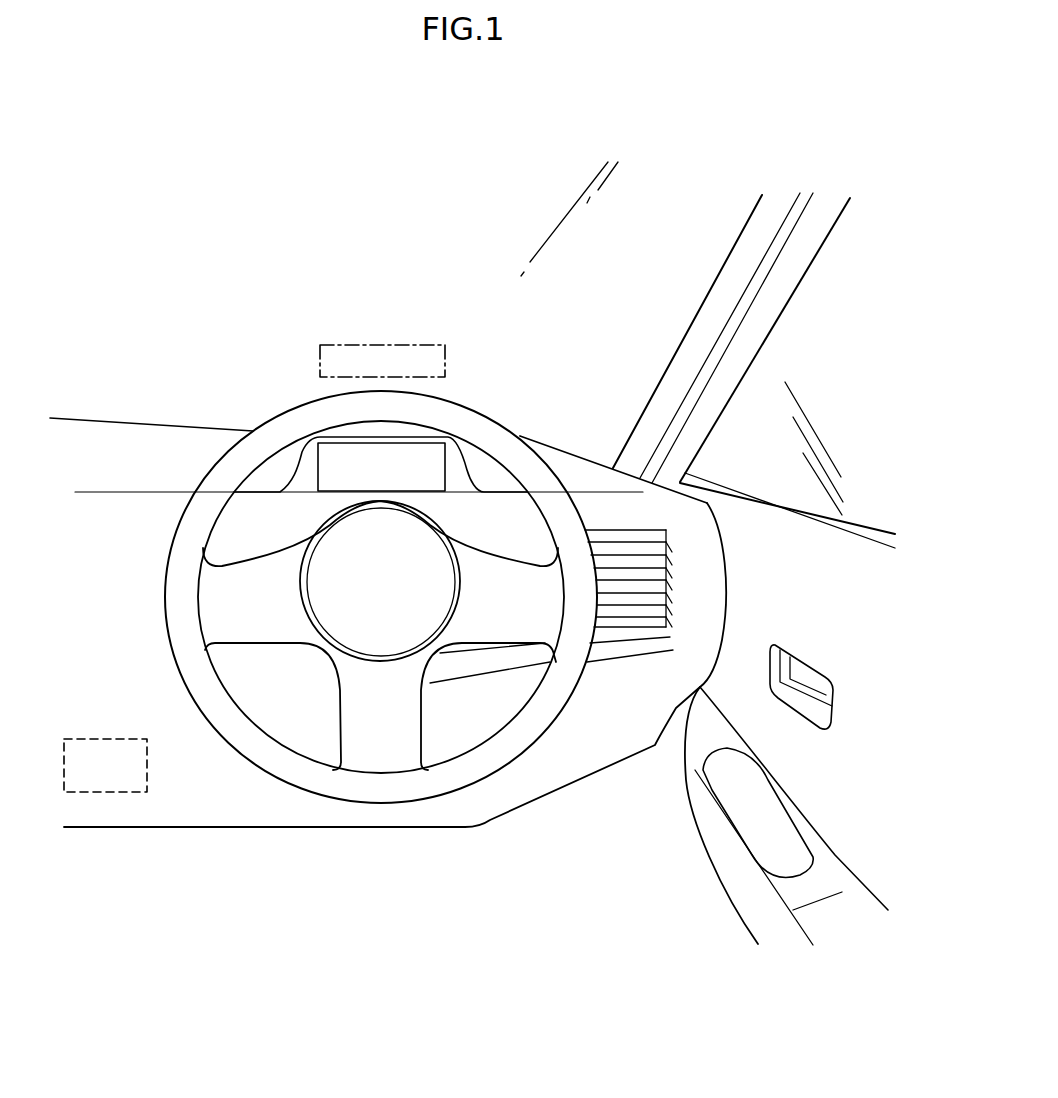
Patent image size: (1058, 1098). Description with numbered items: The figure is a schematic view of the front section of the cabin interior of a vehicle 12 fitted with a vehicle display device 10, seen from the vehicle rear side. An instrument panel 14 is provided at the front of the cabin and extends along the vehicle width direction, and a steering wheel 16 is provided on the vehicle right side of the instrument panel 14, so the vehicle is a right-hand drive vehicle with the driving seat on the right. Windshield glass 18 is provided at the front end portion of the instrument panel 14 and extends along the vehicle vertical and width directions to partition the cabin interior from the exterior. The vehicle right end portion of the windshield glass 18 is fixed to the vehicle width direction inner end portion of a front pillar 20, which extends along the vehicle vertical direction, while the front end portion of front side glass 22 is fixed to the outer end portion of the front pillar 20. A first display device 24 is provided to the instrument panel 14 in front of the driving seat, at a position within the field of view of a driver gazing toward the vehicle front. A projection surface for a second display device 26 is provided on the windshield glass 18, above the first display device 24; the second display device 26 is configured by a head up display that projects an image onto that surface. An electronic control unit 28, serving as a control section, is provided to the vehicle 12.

The vehicle display device 10 is at (282, 282).
The vehicle 12 is at (322, 182).
The instrument panel 14 is at (577, 780).
The steering wheel 16 is at (562, 475).
The windshield glass 18 is at (635, 307).
The front pillar 20 is at (740, 238).
The front side glass 22 is at (862, 476).
The first display device 24 is at (318, 467).
The second display device 26 is at (383, 345).
The electronic control unit (ECU) 28 is at (98, 792).